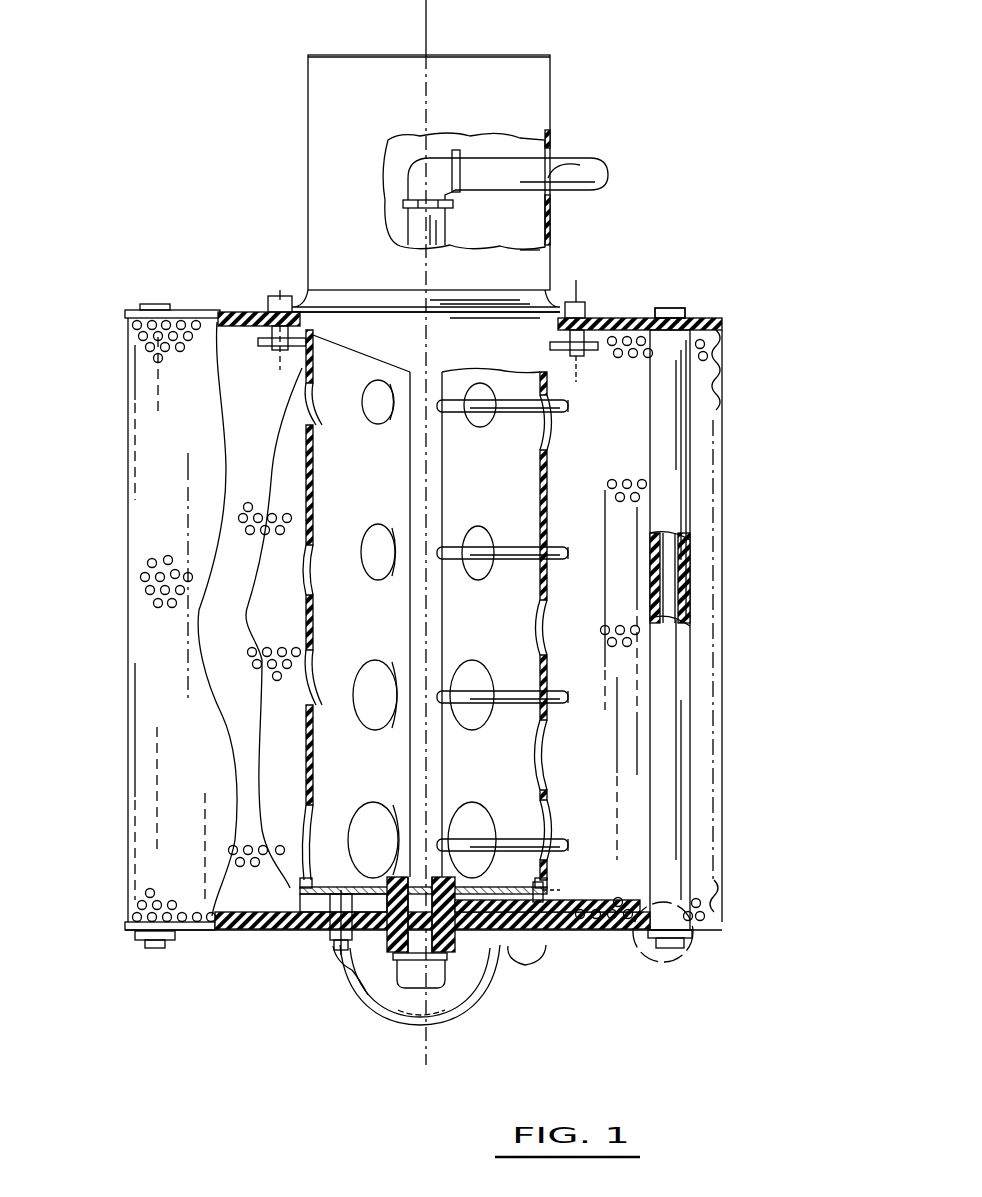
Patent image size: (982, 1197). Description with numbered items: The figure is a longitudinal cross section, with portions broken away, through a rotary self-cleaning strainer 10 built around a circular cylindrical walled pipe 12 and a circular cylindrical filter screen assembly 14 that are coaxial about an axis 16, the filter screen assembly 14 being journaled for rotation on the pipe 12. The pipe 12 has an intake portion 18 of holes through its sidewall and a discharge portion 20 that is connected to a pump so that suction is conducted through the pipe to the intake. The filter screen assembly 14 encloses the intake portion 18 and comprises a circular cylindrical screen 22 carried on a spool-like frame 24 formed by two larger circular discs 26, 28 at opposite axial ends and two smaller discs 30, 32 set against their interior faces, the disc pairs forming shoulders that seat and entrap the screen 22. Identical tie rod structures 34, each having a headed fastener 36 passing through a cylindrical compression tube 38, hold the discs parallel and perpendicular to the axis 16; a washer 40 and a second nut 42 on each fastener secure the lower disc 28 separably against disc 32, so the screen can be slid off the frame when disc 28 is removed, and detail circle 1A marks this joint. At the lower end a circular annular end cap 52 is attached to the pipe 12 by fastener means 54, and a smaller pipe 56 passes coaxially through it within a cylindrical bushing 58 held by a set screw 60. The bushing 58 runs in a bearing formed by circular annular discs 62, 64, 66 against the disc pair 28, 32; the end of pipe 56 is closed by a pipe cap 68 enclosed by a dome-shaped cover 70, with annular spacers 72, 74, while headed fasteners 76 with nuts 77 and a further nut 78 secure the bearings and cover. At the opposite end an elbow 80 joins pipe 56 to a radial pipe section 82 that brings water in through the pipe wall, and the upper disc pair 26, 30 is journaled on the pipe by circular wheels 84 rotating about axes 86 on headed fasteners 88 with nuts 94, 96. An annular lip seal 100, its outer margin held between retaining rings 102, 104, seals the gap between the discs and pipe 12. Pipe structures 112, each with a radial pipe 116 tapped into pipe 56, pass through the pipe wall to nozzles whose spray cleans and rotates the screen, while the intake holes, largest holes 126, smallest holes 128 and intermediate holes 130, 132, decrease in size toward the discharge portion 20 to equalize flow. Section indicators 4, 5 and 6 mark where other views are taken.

The rotary self-cleaning strainer 10 is at (136, 188).
The circular cylindrical walled pipe 12 is at (306, 152).
The circular cylindrical filter screen assembly 14 is at (125, 312).
The axis 16 is at (430, 22).
The intake portion 18 is at (262, 625).
The discharge portion 20 is at (550, 60).
The circular cylindrical screen 22 is at (725, 385).
The spool-like frame 24 is at (125, 930).
The circular disc 26 is at (185, 308).
The circular disc 28 is at (190, 935).
The smaller circular disc 30 is at (258, 322).
The smaller circular disc 32 is at (240, 930).
The tie rod structure 34 is at (690, 682).
The headed fastener 36 is at (690, 318).
The cylindrical compression tube 38 is at (690, 565).
The washer 40 is at (685, 950).
The second nut 42 is at (655, 955).
The detail circle 1A is at (700, 955).
The circular annular end cap 52 is at (318, 842).
The fastener means 54 is at (545, 888).
The circular cylindrical pipe 56 is at (410, 601).
The circular cylindrical bushing 58 is at (440, 860).
The set screw 60 is at (372, 888).
The circular annular disc 62 is at (515, 910).
The circular annular disc 64 is at (305, 930).
The circular annular disc 66 is at (528, 950).
The pipe cap 68 is at (415, 1010).
The dome-shaped cover 70 is at (447, 1020).
The annular spacer 72 is at (400, 995).
The annular spacer 74 is at (470, 895).
The headed fastener 76 is at (335, 893).
The nut 77 is at (330, 935).
The further nut 78 is at (345, 955).
The elbow 80 is at (420, 175).
The pipe section 82 is at (510, 180).
The circular wheel 84 is at (560, 160).
The axis 86 is at (578, 268).
The headed fastener 88 is at (568, 365).
The nut 94 is at (545, 353).
The nut 96 is at (545, 332).
The annular seal 100 is at (372, 300).
The retaining ring 102 is at (590, 302).
The retaining ring 104 is at (600, 318).
The pipe structure 112 is at (505, 402).
The radial pipe 116 is at (565, 410).
The largest holes 126 is at (373, 802).
The smallest holes 128 is at (360, 395).
The hole 130 is at (370, 526).
The hole 132 is at (372, 665).
The section line 4 is at (240, 345).
The section line 5 is at (600, 128).
The section line 6 is at (272, 382).